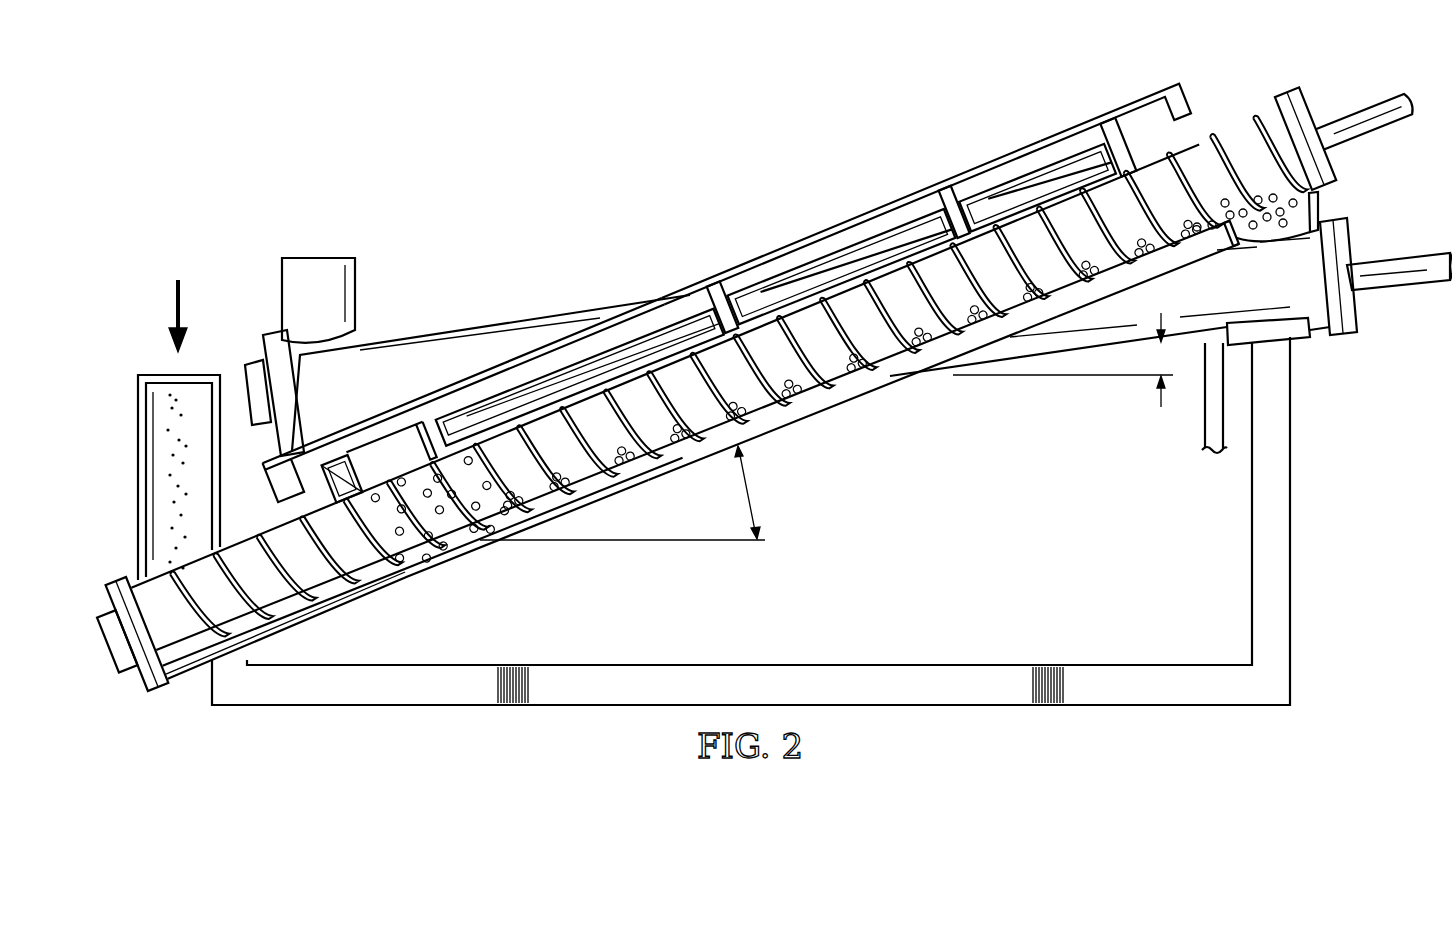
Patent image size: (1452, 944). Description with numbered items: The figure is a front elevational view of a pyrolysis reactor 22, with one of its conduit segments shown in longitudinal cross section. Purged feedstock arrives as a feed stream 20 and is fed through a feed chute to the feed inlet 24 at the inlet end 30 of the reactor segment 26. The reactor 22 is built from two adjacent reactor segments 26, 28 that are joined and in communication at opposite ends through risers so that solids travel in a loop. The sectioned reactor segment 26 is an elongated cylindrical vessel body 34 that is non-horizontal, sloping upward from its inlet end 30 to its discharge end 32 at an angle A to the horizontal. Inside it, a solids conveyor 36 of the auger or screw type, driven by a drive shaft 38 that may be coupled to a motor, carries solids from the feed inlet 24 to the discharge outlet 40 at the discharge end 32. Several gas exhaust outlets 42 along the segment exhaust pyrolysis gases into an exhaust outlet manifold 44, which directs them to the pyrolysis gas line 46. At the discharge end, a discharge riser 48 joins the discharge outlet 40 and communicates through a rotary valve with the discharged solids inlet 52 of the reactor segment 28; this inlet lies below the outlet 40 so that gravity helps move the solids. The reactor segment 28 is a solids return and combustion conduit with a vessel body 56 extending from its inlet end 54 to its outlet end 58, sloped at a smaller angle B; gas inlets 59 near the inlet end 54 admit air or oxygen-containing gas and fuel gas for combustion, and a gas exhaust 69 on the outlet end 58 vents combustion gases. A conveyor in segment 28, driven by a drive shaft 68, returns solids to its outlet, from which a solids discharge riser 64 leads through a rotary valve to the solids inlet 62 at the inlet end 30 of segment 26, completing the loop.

The feed stream 20 is at (178, 305).
The pyrolysis reactor 22 is at (762, 372).
The feed inlet 24 is at (140, 580).
The reactor segment 26 is at (466, 563).
The reactor segment 28 is at (932, 380).
The inlet end 30 is at (333, 606).
The discharge end 32 is at (1164, 268).
The vessel body 34 is at (828, 407).
The solids conveyor 36 is at (1240, 150).
The drive shaft 38 is at (1352, 105).
The discharge outlet 40 is at (1320, 208).
The gas exhaust outlets 42 is at (725, 320).
The exhaust outlet manifold 44 is at (980, 165).
The pyrolysis gas line 46 is at (1128, 95).
The discharge riser 48 is at (1320, 222).
The discharged solids inlet 52 is at (1258, 240).
The inlet end 54 is at (1320, 342).
The vessel body 56 is at (605, 298).
The outlet end 58 is at (425, 330).
The gas inlets 59 is at (1200, 440).
The solids inlet 62 is at (430, 445).
The solids discharge riser 64 is at (330, 462).
The drive shaft 68 is at (1400, 285).
The gas exhaust 69 is at (282, 284).